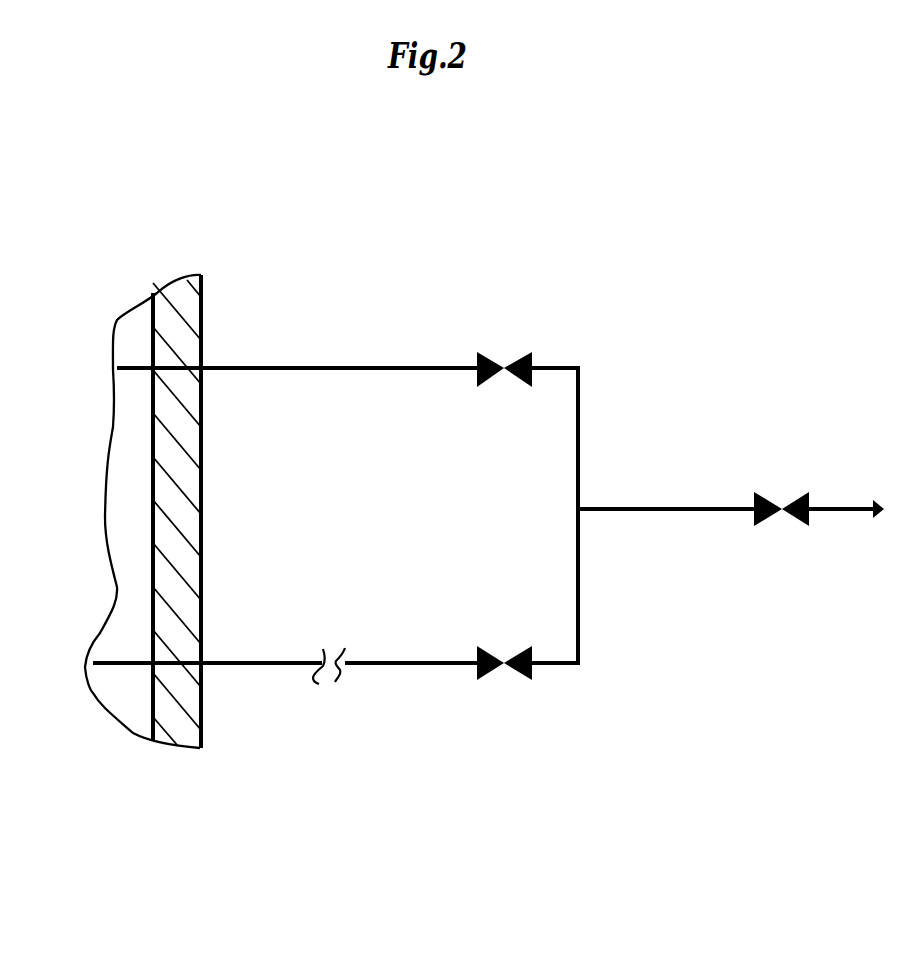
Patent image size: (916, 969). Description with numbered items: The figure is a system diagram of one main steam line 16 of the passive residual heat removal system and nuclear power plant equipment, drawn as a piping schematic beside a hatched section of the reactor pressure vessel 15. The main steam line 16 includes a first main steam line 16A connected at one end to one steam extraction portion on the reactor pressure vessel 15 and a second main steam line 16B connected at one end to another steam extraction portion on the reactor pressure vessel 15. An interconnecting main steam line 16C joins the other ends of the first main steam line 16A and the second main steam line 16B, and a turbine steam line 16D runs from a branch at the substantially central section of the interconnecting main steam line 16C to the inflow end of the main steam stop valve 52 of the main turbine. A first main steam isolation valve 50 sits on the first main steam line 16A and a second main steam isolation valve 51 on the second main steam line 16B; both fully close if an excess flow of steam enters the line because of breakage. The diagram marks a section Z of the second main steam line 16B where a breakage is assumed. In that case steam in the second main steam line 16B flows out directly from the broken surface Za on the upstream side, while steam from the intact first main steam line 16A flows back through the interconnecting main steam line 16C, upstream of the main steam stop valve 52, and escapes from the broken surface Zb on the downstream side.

The reactor pressure vessel 15 is at (173, 353).
The main steam line 16 is at (488, 474).
The first main steam line 16A is at (392, 367).
The second main steam line 16B is at (418, 662).
The interconnecting main steam line 16C is at (578, 418).
The turbine steam line 16D is at (680, 510).
The first main steam isolation valve 50 is at (532, 356).
The second main steam isolation valve 51 is at (532, 667).
The main steam stop valve 52 is at (803, 492).
The section Z is at (385, 699).
The broken surface Za is at (332, 683).
The broken surface Zb is at (336, 651).